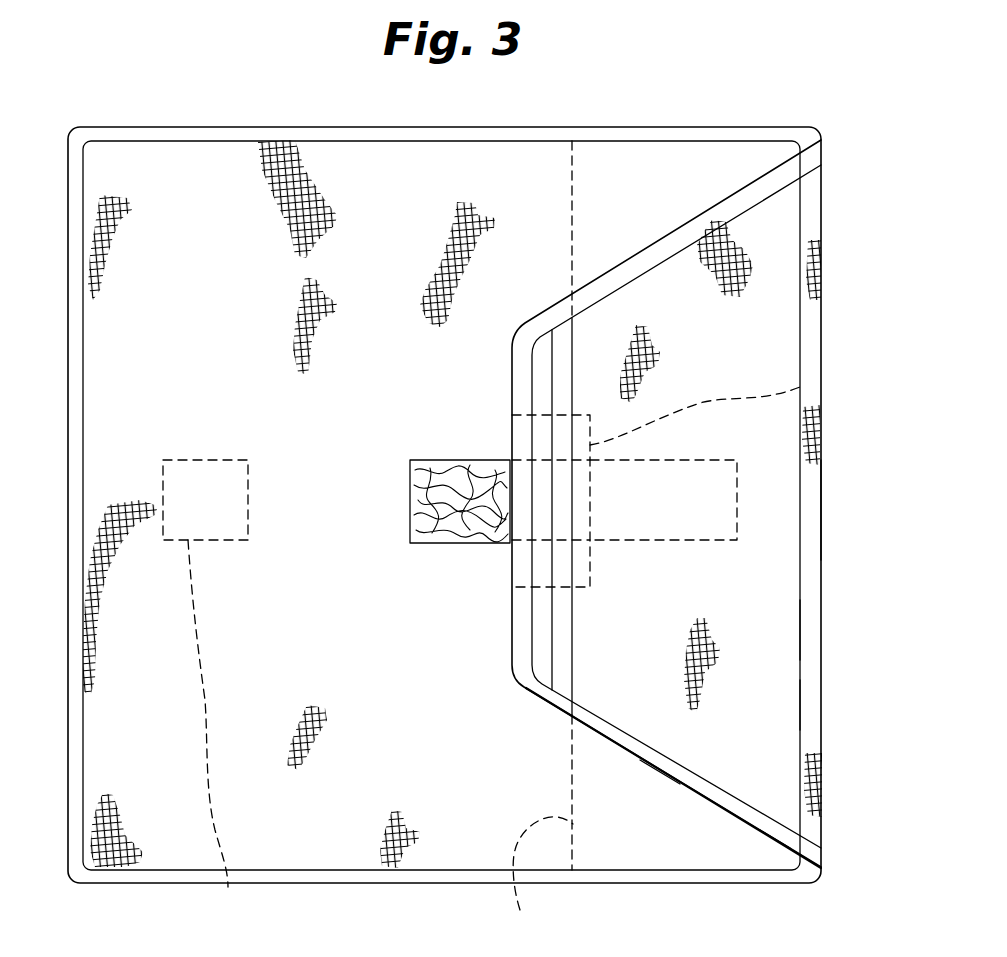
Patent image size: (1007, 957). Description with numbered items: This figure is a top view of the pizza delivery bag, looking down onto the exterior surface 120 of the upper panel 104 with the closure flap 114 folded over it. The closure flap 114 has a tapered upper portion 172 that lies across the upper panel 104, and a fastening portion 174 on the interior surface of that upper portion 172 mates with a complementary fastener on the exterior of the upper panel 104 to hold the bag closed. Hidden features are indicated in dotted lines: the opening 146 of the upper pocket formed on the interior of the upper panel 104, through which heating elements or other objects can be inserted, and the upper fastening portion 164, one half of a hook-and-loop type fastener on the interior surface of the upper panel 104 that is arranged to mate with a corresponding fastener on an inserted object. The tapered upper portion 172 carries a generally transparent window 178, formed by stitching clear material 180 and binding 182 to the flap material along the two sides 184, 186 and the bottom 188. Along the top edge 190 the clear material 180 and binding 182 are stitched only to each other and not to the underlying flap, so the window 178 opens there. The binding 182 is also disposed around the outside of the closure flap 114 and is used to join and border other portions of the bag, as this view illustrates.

The upper panel 104 is at (367, 151).
The closure flap 114 is at (779, 200).
The exterior surface 120 is at (166, 163).
The opening 146 is at (543, 871).
The upper fastening portion 164 is at (229, 889).
The tapered upper portion 172 is at (770, 797).
The fastening portion 174 is at (800, 387).
The transparent window 178 is at (782, 708).
The clear material 180 is at (782, 647).
The binding 182 is at (66, 152).
The side 184 is at (660, 773).
The side 186 is at (614, 254).
The bottom 188 is at (823, 574).
The top edge 190 is at (550, 660).